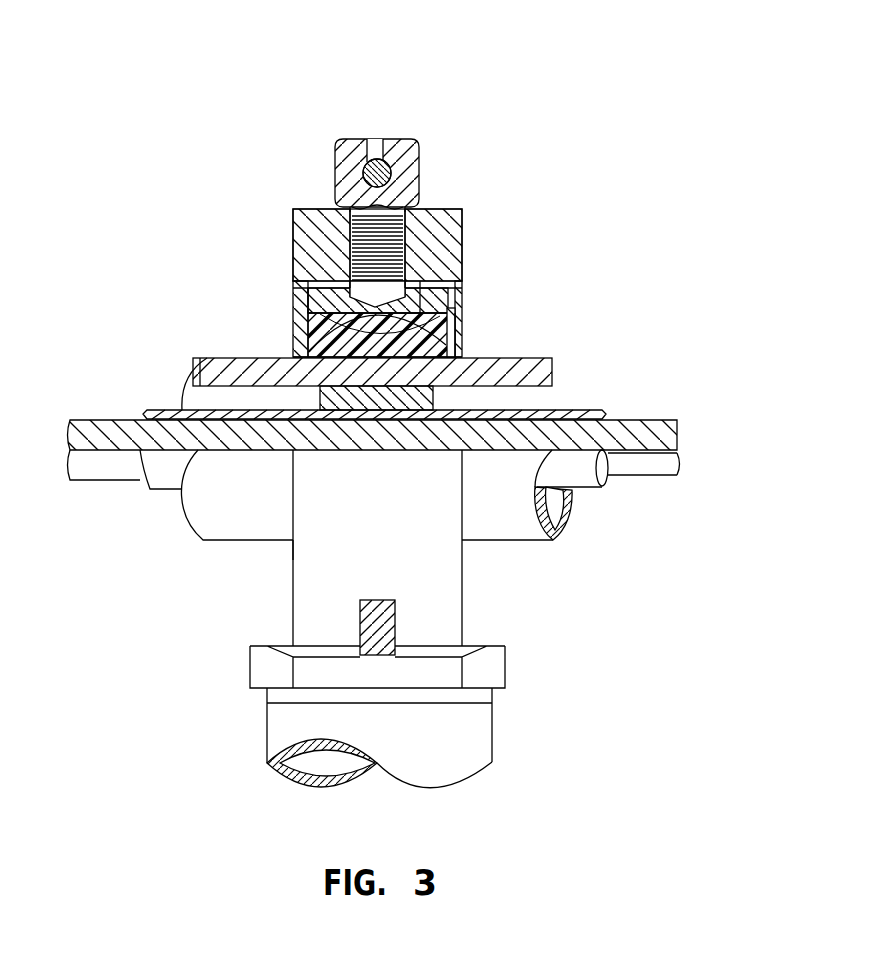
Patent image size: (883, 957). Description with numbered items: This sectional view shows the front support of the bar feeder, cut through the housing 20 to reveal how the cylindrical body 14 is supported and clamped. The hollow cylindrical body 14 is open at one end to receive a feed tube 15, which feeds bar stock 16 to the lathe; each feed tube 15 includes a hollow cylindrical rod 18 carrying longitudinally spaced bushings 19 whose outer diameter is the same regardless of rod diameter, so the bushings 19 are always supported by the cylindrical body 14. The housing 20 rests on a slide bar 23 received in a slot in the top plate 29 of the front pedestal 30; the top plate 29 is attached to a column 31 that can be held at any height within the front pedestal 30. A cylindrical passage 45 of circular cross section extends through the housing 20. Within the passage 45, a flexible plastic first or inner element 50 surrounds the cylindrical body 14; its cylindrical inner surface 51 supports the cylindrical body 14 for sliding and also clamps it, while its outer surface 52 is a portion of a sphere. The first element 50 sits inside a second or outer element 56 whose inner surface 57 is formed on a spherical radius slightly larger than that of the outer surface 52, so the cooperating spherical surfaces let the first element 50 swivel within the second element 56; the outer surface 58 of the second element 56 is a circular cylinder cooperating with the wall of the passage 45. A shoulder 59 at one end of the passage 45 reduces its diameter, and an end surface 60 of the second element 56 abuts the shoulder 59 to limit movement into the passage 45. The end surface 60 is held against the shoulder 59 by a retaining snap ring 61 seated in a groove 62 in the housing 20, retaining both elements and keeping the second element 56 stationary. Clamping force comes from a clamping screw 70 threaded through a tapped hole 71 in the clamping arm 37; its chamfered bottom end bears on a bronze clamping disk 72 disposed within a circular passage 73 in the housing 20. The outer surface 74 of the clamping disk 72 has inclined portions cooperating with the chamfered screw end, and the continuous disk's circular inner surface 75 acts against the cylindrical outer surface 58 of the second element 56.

The cylindrical body 14 is at (553, 360).
The feed tube 15 is at (586, 489).
The bar stock 16 is at (680, 435).
The hollow cylindrical rod 18 is at (606, 414).
The bushings 19 is at (436, 398).
The housing 20 is at (467, 570).
The slide bar 23 is at (398, 628).
The top plate 29 is at (507, 667).
The front pedestal 30 is at (495, 750).
The column 31 is at (493, 718).
The clamping arm 37 is at (467, 206).
The cylindrical passage 45 is at (418, 283).
The first or inner element 50 is at (447, 339).
The inner surface 51 is at (343, 450).
The outer surface 52 is at (325, 306).
The second or outer element 56 is at (462, 344).
The inner surface 57 is at (332, 385).
The outer surface 58 is at (335, 289).
The shoulder 59 is at (297, 332).
The end surface 60 is at (297, 352).
The retaining snap ring 61 is at (453, 330).
The groove 62 is at (453, 308).
The clamping screw 70 is at (347, 136).
The tapped hole 71 is at (347, 200).
The clamping disk 72 is at (334, 280).
The circular passage 73 is at (410, 290).
The outer surface 74 is at (412, 290).
The inner surface 75 is at (397, 357).